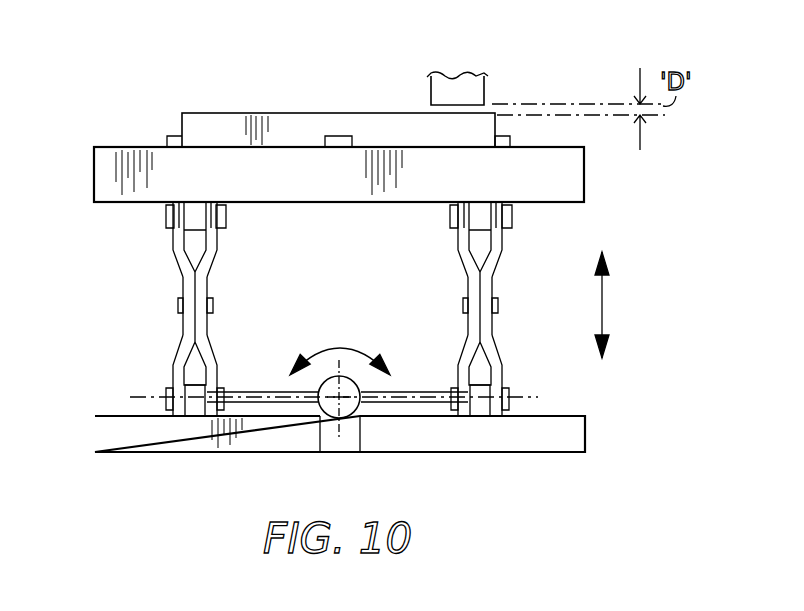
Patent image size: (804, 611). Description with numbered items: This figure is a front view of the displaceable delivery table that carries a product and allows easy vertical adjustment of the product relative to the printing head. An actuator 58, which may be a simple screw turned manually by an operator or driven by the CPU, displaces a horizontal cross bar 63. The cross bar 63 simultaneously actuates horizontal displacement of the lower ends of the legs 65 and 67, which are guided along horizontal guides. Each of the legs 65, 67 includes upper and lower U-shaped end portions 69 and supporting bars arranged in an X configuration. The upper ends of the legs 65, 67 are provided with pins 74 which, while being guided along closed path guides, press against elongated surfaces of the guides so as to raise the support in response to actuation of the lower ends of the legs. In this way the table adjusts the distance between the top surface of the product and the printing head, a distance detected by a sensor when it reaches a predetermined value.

The actuator 58 is at (352, 406).
The horizontal cross bar 63 is at (240, 393).
The leg 65 is at (201, 292).
The leg 67 is at (467, 291).
The U-shaped end portion 69 is at (176, 255).
The pin 74 is at (195, 217).